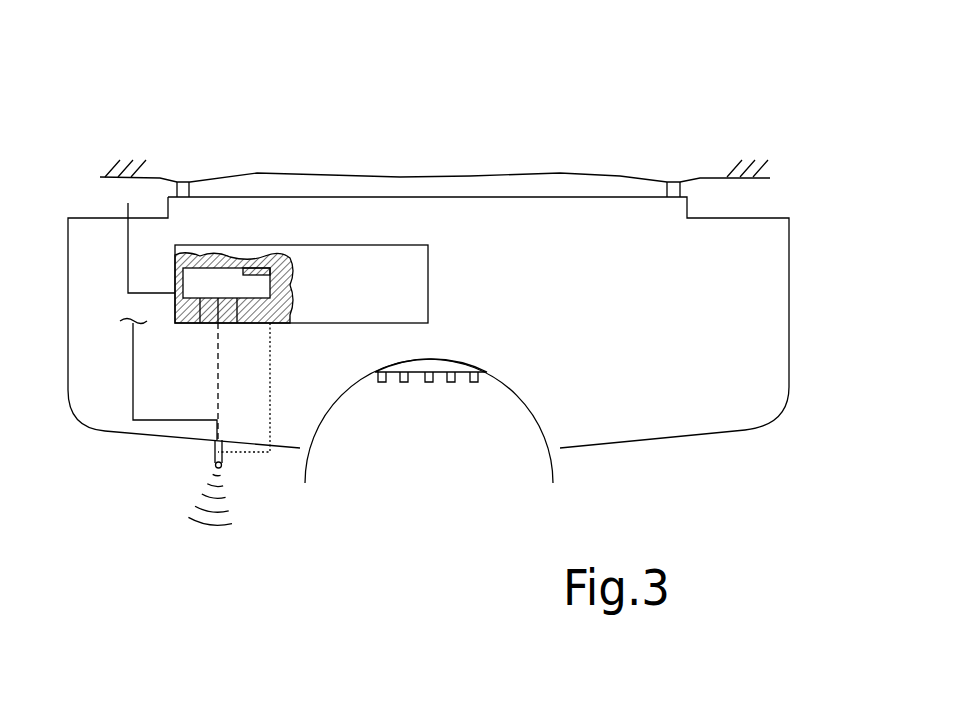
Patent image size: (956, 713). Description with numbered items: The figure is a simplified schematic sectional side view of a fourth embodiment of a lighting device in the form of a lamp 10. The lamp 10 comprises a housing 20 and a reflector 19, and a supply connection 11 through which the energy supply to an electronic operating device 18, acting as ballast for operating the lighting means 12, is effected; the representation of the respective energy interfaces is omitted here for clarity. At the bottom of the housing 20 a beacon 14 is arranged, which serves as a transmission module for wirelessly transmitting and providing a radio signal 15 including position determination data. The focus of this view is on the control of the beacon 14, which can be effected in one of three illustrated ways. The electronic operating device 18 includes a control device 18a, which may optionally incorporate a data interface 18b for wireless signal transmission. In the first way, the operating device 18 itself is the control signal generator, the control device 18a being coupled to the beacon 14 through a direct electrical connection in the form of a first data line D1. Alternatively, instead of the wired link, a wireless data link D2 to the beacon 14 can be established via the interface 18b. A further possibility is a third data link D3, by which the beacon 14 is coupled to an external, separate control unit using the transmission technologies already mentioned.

The lamp 10 is at (313, 92).
The supply connection 11 is at (128, 205).
The lighting means 12 is at (415, 373).
The beacon 14 is at (213, 457).
The radio signal 15 is at (207, 505).
The electronic operating device 18 is at (387, 280).
The control device 18a is at (217, 280).
The data interface 18b is at (258, 265).
The reflector 19 is at (553, 472).
The housing 20 is at (790, 248).
The first data line D1 is at (218, 372).
The wireless data link D2 is at (270, 352).
The third data link D3 is at (133, 375).